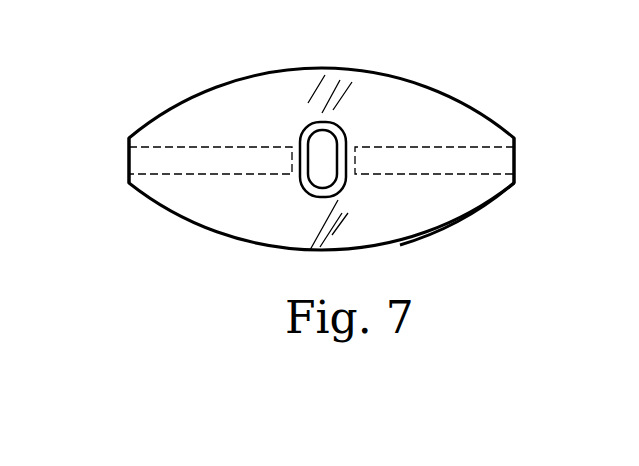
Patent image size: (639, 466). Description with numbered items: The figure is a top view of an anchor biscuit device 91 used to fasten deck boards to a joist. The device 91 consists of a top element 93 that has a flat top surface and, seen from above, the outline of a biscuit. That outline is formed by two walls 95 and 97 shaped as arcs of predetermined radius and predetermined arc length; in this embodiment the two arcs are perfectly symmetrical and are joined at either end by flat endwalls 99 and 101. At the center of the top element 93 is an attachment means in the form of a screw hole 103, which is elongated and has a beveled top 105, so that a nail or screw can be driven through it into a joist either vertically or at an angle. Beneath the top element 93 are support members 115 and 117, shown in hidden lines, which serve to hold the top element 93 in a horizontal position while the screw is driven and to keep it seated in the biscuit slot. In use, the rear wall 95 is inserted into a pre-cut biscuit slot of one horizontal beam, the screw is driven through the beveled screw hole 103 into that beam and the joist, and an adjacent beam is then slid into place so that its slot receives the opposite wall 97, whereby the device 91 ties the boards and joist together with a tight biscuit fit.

The anchor biscuit device 91 is at (452, 68).
The top element 93 is at (443, 212).
The wall 95 is at (347, 70).
The wall 97 is at (393, 245).
The flat endwall 99 is at (129, 155).
The flat endwall 101 is at (514, 157).
The screw hole 103 is at (316, 152).
The beveled top 105 is at (341, 128).
The support member 115 is at (203, 168).
The support member 117 is at (470, 168).